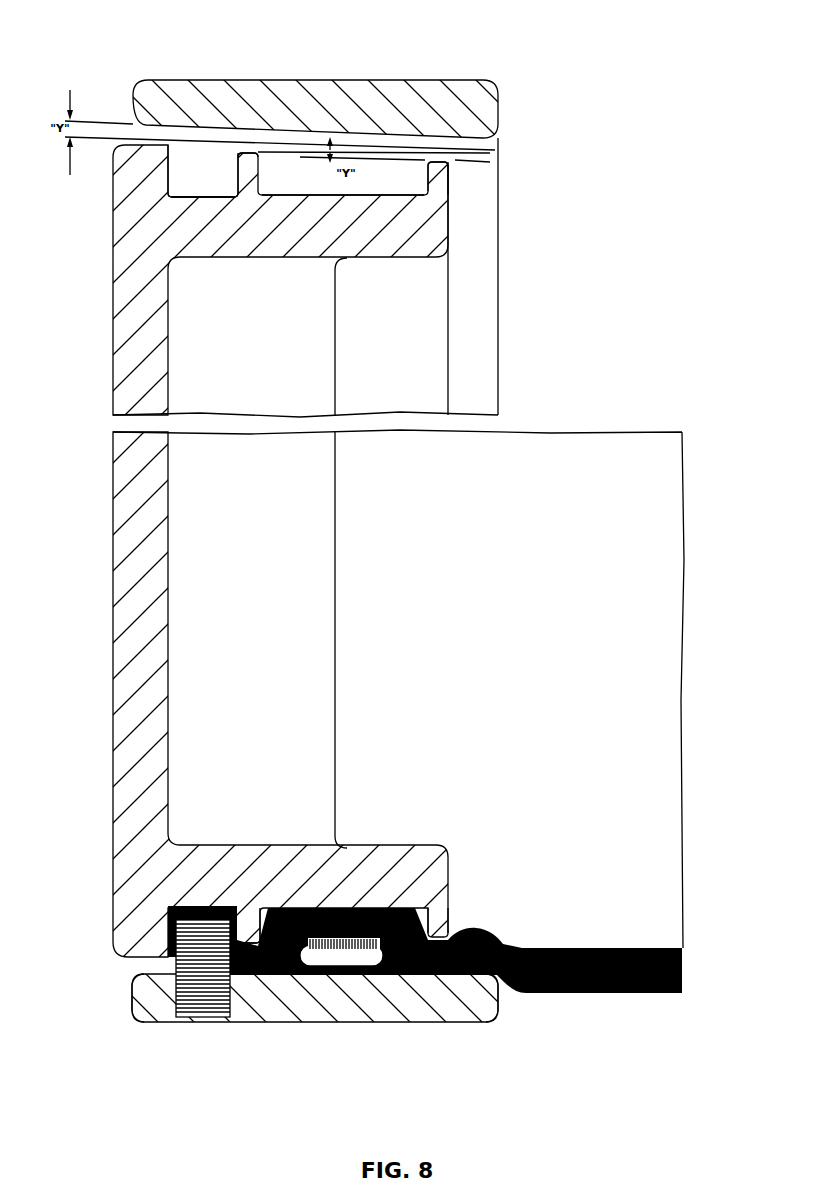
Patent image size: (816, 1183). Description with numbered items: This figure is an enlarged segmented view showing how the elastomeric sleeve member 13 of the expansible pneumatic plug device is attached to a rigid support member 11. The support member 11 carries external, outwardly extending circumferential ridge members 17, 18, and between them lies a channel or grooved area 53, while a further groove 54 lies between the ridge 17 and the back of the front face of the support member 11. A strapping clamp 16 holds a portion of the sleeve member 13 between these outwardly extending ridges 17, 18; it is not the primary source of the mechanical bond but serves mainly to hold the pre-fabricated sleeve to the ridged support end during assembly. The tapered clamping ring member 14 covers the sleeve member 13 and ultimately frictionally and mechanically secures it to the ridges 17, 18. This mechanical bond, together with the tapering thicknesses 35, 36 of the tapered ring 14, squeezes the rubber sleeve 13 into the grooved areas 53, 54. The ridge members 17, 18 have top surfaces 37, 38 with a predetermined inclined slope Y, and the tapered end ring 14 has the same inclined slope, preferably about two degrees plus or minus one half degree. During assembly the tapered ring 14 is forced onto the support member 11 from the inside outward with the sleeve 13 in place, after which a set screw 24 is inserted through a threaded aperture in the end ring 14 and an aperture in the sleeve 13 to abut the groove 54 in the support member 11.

The rigid support member 11 is at (113, 300).
The sleeve member 13 is at (619, 993).
The tapered clamping ring member 14 is at (334, 80).
The strapping clamp 16 is at (345, 953).
The external ridge 17 is at (243, 165).
The external ridge 18 is at (440, 185).
The set screw 24 is at (201, 1012).
The tapering thickness 35 is at (140, 1003).
The tapering thickness 36 is at (497, 1004).
The top surface 37 is at (248, 156).
The top surface 38 is at (439, 160).
The grooved area 53 is at (375, 163).
The groove 54 is at (205, 165).